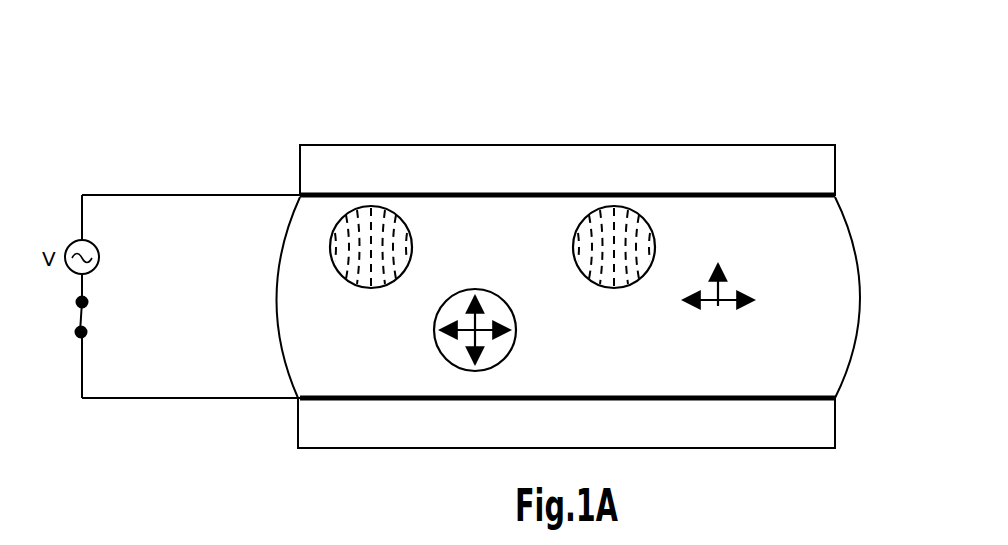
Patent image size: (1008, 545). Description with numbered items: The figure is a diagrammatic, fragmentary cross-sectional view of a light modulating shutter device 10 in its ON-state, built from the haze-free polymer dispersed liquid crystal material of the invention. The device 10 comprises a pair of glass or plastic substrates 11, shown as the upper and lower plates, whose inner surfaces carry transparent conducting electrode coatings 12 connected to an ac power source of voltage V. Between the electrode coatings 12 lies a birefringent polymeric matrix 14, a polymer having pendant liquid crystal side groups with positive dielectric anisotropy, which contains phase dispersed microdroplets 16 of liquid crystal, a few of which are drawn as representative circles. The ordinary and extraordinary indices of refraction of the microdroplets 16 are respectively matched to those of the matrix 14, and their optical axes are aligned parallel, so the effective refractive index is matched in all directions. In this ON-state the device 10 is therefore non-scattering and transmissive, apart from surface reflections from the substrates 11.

The light modulating shutter device 10 is at (717, 106).
The substrates 11 is at (450, 145).
The transparent conducting electrode coatings 12 is at (367, 195).
The birefringent polymeric matrix 14 is at (807, 350).
The microdroplets of liquid crystal 16 is at (580, 278).